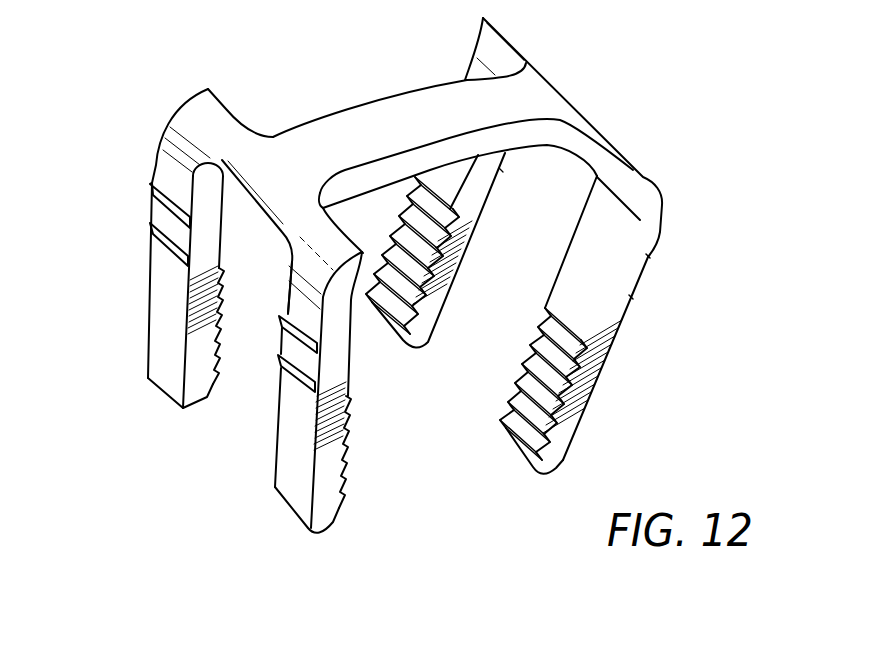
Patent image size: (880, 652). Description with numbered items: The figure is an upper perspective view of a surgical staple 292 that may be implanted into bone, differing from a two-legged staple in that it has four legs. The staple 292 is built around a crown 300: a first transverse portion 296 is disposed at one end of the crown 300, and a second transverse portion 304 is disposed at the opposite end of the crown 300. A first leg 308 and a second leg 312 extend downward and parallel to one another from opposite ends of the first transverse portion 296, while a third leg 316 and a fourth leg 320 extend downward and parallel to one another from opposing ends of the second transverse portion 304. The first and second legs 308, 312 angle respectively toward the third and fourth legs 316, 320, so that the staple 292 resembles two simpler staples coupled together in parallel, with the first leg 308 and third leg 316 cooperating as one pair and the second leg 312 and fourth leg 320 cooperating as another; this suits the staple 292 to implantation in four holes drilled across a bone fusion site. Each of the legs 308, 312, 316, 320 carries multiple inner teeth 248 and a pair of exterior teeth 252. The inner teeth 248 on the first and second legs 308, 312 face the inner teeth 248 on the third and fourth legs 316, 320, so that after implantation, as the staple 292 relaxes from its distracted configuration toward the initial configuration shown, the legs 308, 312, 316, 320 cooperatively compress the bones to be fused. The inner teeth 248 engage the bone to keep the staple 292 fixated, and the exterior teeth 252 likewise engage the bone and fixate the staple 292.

The surgical staple 292 is at (612, 53).
The first transverse portion 296 is at (253, 178).
The crown 300 is at (412, 120).
The second transverse portion 304 is at (555, 103).
The first leg 308 is at (290, 498).
The second leg 312 is at (160, 356).
The third leg 316 is at (577, 390).
The fourth leg 320 is at (445, 273).
The inner teeth 248 is at (220, 360).
The exterior teeth 252 is at (150, 225).